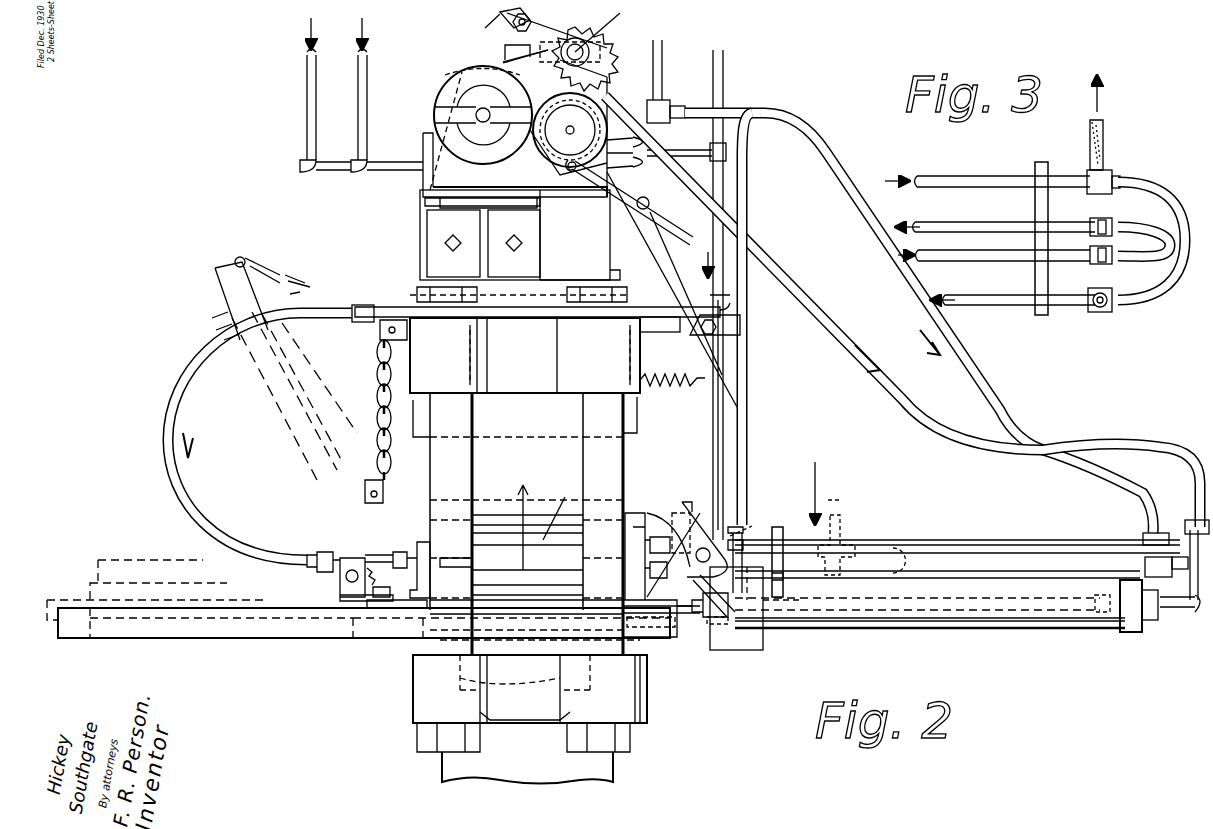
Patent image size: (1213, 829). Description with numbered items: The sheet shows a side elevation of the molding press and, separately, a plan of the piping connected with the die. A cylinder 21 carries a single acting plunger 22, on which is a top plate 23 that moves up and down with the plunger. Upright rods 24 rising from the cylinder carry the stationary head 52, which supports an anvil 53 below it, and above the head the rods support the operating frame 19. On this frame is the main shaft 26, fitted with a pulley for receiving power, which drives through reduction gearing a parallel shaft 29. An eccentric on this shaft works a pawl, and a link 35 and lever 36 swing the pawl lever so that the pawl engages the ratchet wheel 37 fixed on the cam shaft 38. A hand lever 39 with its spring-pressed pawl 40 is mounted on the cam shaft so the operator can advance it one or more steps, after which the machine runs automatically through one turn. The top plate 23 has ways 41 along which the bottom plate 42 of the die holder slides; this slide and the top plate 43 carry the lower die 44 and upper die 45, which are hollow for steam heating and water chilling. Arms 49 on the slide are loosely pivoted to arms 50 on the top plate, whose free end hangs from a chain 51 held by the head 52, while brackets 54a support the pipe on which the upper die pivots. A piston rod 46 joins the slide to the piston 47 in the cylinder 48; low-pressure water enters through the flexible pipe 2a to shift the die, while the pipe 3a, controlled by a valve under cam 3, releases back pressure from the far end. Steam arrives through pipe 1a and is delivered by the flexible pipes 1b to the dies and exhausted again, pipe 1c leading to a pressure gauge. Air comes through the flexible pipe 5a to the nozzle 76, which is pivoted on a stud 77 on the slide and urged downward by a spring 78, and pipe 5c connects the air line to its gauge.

In FIG. 2, the steam pipe 1a is at (308, 122).
In FIG. 2, the flexible pipe 1b is at (953, 570).
In FIG. 3, the flexible pipe 1b is at (975, 208).
In FIG. 2, the gauge pipe 1c is at (662, 68).
In FIG. 2, the flexible pipe 2a is at (748, 350).
In FIG. 2, the cam 3 is at (824, 516).
In FIG. 2, the pipe 3a is at (1130, 450).
In FIG. 2, the air pipe 5a is at (370, 120).
In FIG. 2, the gauge pipe 5c is at (724, 72).
In FIG. 2, the operating frame 19 is at (420, 242).
In FIG. 2, the cylinder 21 is at (613, 770).
In FIG. 2, the plunger 22 is at (450, 680).
In FIG. 2, the top plate 23 is at (518, 628).
In FIG. 2, the upright rods 24 is at (435, 483).
In FIG. 2, the main shaft 26 is at (570, 130).
In FIG. 2, the parallel shaft 29 is at (520, 112).
In FIG. 2, the link 35 is at (637, 190).
In FIG. 2, the lever 36 is at (660, 256).
In FIG. 2, the ratchet wheel 37 is at (614, 45).
In FIG. 2, the cam shaft 38 is at (603, 25).
In FIG. 2, the hand lever 39 is at (500, 17).
In FIG. 2, the spring-pressed pawl 40 is at (518, 32).
In FIG. 2, the guides or ways 41 is at (310, 637).
In FIG. 2, the bottom plate 42 is at (78, 590).
In FIG. 2, the top plate 43 is at (500, 493).
In FIG. 2, the lower die 44 is at (140, 555).
In FIG. 2, the upper die 45 is at (237, 372).
In FIG. 2, the piston rod 46 is at (716, 605).
In FIG. 2, the piston 47 is at (1105, 622).
In FIG. 2, the cylinder 48 is at (990, 620).
In FIG. 2, the arms 49 is at (725, 620).
In FIG. 2, the arms 50 is at (703, 520).
In FIG. 2, the chain 51 is at (295, 262).
In FIG. 2, the head 52 is at (525, 355).
In FIG. 2, the anvil 53 is at (518, 422).
In FIG. 2, the brackets 54a is at (752, 526).
In FIG. 2, the nozzle 76 is at (372, 562).
In FIG. 2, the stud 77 is at (345, 574).
In FIG. 2, the spring 78 is at (392, 582).